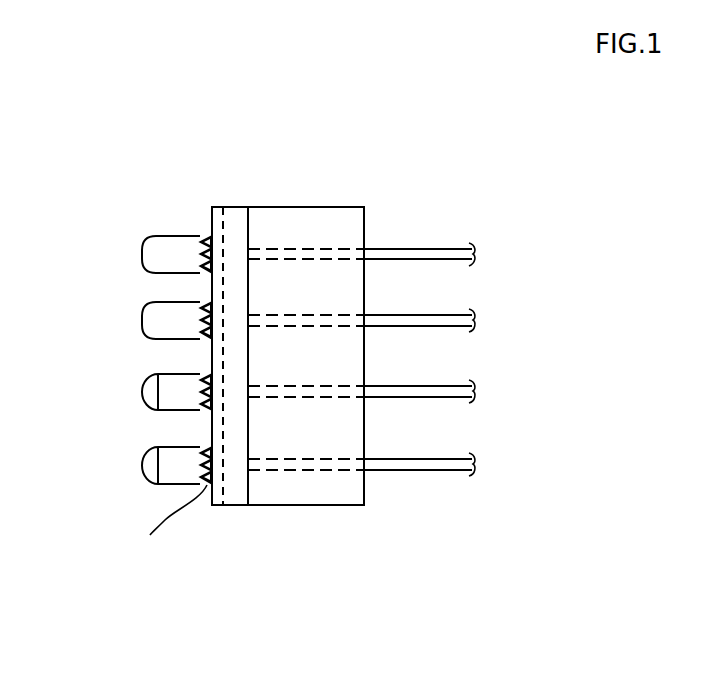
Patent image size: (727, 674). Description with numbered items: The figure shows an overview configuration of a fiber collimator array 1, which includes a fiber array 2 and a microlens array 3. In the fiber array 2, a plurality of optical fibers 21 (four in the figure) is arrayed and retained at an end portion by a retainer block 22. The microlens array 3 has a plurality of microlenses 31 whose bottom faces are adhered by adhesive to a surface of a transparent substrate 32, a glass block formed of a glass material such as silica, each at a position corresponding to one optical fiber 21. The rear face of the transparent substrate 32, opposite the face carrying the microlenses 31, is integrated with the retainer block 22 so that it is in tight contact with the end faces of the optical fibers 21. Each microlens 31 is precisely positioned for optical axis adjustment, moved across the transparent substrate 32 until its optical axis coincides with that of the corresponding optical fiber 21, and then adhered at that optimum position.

The fiber collimator array 1 is at (287, 112).
The fiber array 2 is at (550, 158).
The optical fiber 21 is at (420, 247).
The retainer block 22 is at (348, 207).
The microlens array 3 is at (153, 165).
The microlens 31 is at (142, 255).
The transparent substrate 32 is at (233, 207).